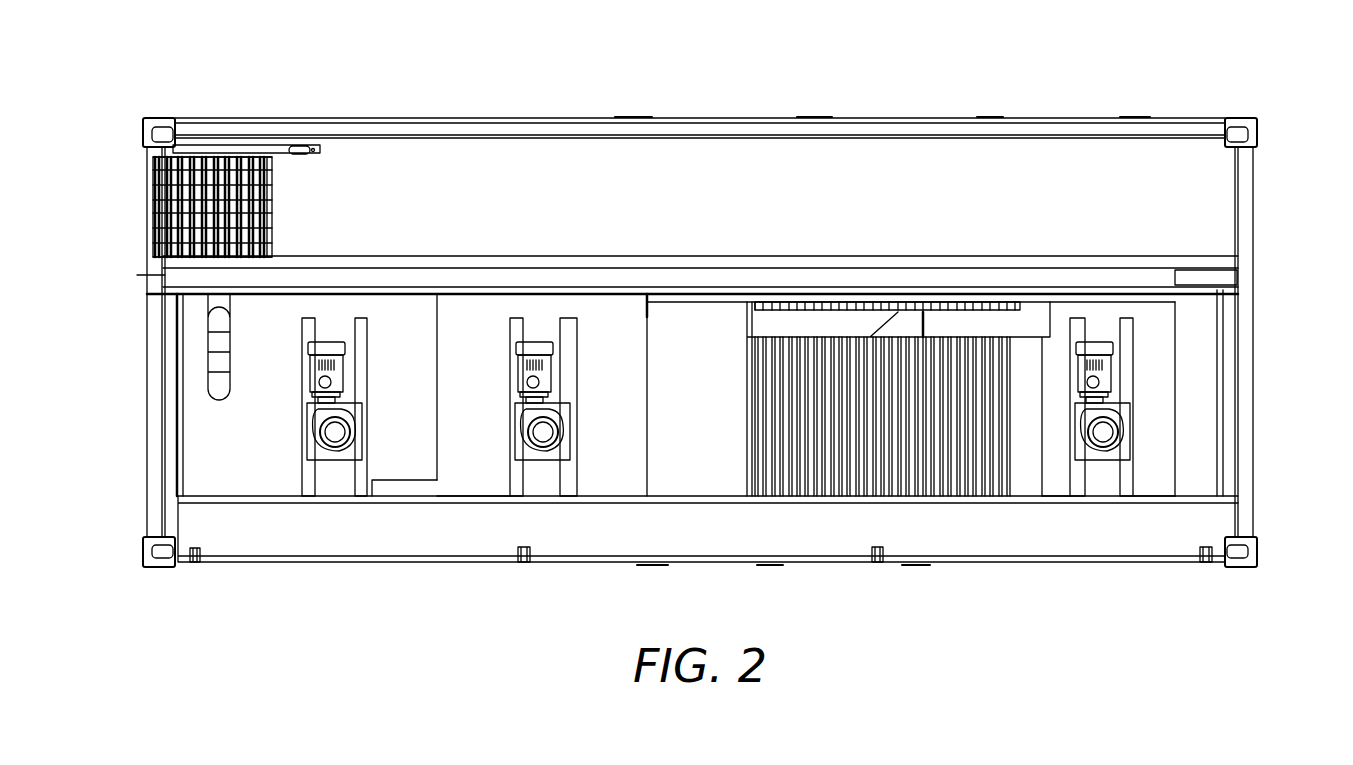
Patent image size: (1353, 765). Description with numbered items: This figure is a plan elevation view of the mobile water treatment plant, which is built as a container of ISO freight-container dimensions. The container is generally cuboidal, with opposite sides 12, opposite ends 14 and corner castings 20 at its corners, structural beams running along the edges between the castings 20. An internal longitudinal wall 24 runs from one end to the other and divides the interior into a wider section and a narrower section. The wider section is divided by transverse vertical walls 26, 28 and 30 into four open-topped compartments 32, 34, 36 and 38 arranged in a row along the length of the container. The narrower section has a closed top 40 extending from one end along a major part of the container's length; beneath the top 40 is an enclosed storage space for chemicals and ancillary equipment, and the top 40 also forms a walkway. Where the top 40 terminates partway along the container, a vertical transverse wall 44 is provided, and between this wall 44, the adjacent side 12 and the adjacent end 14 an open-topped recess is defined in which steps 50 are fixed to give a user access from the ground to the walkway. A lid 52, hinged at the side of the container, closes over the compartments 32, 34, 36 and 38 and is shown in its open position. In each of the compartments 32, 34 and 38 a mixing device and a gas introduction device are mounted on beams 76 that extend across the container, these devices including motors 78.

The side 12 is at (737, 118).
The end 14 is at (147, 340).
The corner casting 20 is at (143, 130).
The internal longitudinal wall 24 is at (672, 264).
The transverse vertical wall 26 is at (437, 395).
The transverse vertical wall 28 is at (647, 395).
The transverse vertical wall 30 is at (1055, 483).
The compartment 32 is at (407, 315).
The compartment 34 is at (470, 315).
The compartment 36 is at (978, 338).
The compartment 38 is at (1157, 483).
The closed top 40 is at (1037, 165).
The vertical transverse wall 44 is at (272, 185).
The steps 50 is at (228, 170).
The lid 52 is at (494, 565).
The beam 76 is at (567, 325).
The motor 78 is at (326, 350).